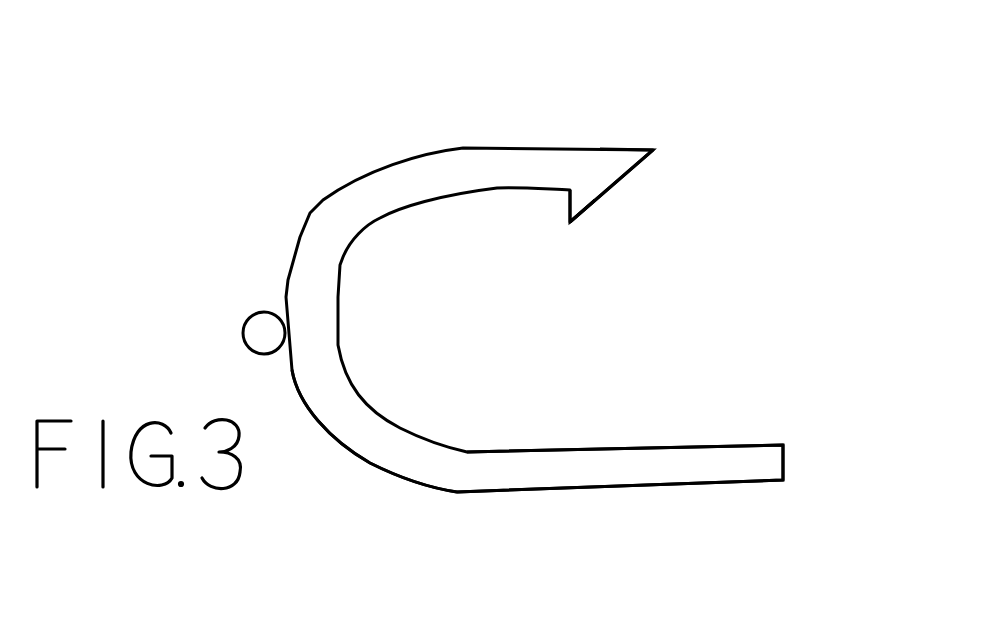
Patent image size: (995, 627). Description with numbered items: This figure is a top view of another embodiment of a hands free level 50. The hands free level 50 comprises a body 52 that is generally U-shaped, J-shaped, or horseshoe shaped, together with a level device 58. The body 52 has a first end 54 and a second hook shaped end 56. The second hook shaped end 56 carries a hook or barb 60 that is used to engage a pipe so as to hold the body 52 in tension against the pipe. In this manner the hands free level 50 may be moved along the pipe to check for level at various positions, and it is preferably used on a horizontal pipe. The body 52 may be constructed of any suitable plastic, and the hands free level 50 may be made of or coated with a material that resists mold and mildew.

The hands free level 50 is at (510, 112).
The body 52 is at (442, 467).
The first end 54 is at (804, 462).
The second hook shaped end 56 is at (666, 166).
The level device 58 is at (251, 290).
The hook or barb 60 is at (600, 193).